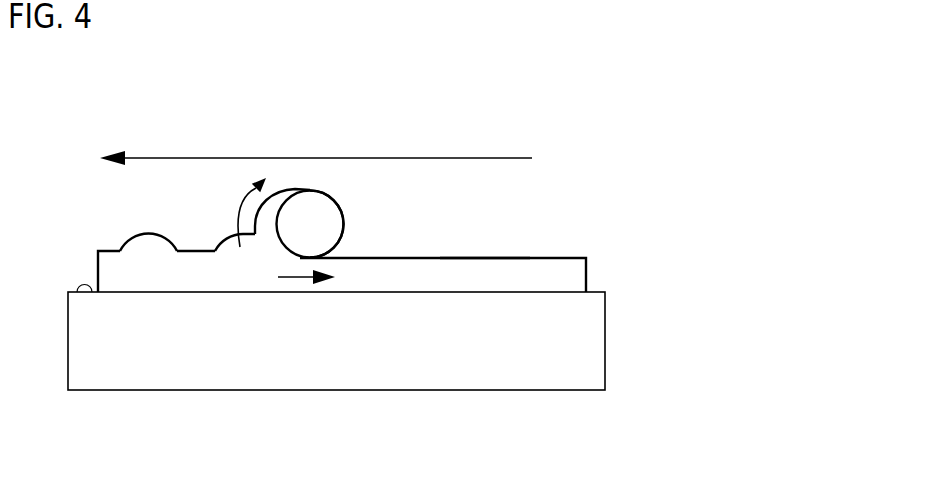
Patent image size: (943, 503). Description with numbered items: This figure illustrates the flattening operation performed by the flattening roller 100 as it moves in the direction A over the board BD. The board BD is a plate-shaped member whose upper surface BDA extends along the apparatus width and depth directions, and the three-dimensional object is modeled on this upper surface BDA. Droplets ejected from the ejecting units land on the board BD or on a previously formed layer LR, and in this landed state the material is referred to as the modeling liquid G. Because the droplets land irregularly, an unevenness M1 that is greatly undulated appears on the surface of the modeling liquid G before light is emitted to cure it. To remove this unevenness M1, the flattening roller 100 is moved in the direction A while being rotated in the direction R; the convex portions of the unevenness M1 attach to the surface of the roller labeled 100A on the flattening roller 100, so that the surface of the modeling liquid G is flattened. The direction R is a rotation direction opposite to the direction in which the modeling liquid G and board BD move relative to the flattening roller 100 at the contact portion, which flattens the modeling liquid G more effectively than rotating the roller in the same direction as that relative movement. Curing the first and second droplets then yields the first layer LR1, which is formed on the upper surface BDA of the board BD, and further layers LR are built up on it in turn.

The direction A is at (342, 157).
The rotation direction R is at (238, 212).
The unevenness M1 is at (140, 240).
The flattening roller 100 is at (327, 208).
The outer circumferential surface of roller 100A is at (343, 225).
The modeling liquid G is at (482, 268).
The first layer LR1 is at (578, 272).
The layer LR is at (405, 271).
The upper surface BDA is at (78, 292).
The board BD is at (208, 378).